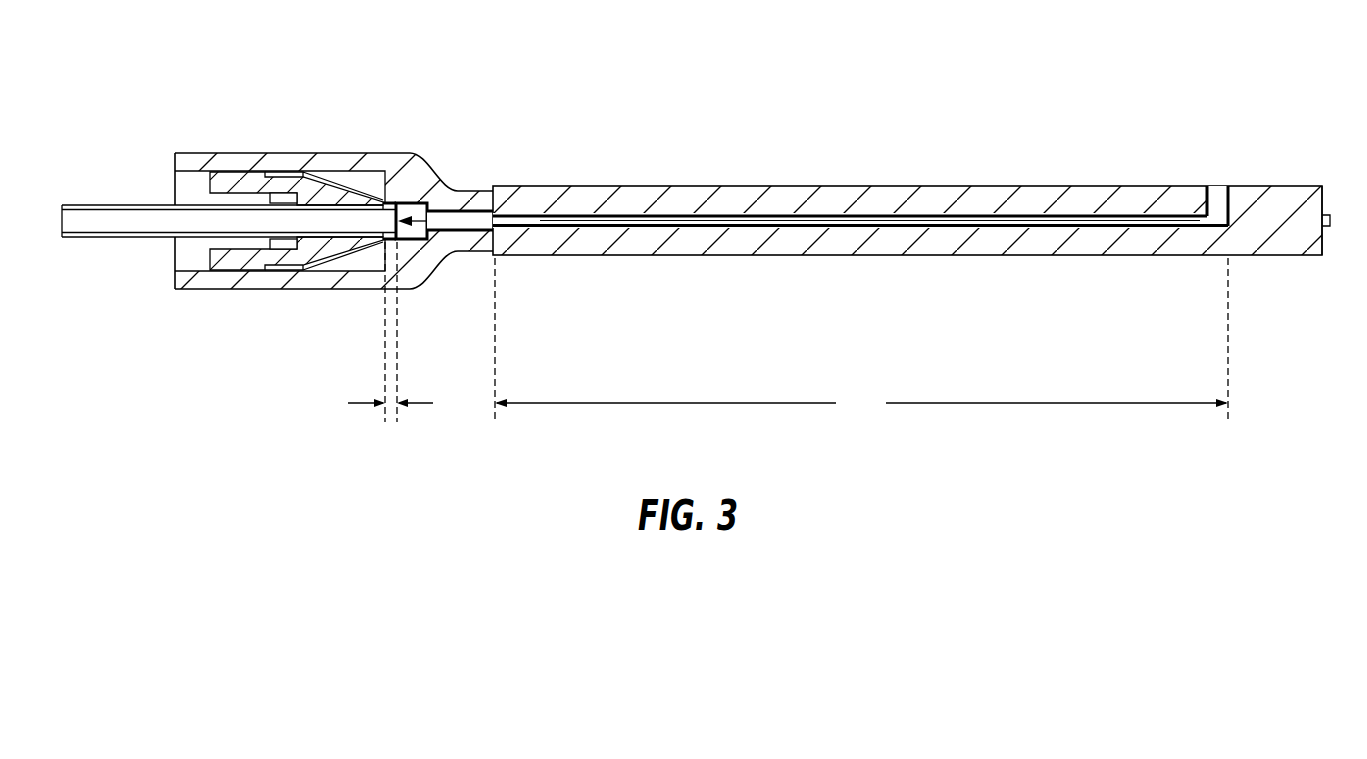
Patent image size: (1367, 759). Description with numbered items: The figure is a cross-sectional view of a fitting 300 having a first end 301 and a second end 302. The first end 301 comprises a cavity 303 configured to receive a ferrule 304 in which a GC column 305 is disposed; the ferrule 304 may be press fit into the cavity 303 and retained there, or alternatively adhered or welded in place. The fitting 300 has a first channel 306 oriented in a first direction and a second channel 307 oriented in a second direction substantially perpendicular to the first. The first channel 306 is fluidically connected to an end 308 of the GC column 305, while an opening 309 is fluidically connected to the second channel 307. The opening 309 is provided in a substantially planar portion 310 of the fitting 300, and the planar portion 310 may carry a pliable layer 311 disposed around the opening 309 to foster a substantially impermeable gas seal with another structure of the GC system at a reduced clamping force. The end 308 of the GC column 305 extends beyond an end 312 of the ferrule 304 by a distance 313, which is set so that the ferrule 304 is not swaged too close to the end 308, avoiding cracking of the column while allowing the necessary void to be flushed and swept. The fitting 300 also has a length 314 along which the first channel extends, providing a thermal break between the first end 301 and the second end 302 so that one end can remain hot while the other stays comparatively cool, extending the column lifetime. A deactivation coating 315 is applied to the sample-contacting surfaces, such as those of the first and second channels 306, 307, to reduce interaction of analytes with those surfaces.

The fitting 300 is at (738, 37).
The first end 301 is at (218, 163).
The second end 302 is at (1268, 257).
The cavity 303 is at (188, 187).
The ferrule 304 is at (372, 192).
The GC column 305 is at (127, 225).
The first channel 306 is at (540, 222).
The second channel 307 is at (1218, 198).
The end 308 is at (422, 200).
The opening 309 is at (1228, 186).
The planar portion 310 is at (1270, 186).
The pliable layer 311 is at (1152, 192).
The end 312 is at (382, 243).
The distance 313 is at (373, 332).
The length 314 is at (861, 340).
The coating 315 is at (813, 213).